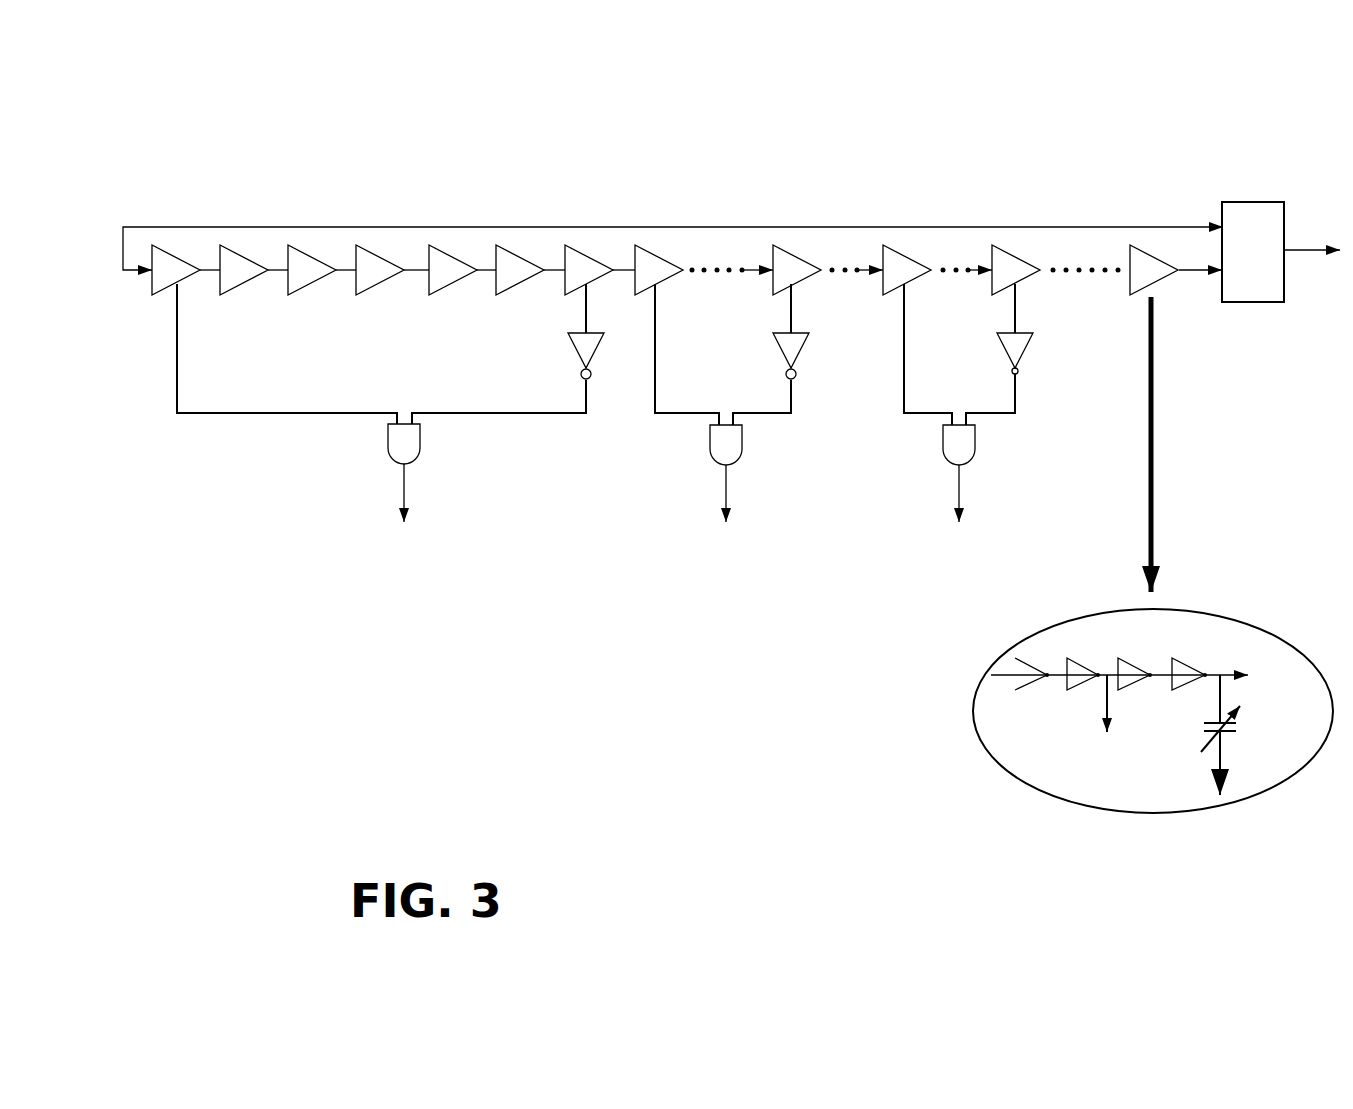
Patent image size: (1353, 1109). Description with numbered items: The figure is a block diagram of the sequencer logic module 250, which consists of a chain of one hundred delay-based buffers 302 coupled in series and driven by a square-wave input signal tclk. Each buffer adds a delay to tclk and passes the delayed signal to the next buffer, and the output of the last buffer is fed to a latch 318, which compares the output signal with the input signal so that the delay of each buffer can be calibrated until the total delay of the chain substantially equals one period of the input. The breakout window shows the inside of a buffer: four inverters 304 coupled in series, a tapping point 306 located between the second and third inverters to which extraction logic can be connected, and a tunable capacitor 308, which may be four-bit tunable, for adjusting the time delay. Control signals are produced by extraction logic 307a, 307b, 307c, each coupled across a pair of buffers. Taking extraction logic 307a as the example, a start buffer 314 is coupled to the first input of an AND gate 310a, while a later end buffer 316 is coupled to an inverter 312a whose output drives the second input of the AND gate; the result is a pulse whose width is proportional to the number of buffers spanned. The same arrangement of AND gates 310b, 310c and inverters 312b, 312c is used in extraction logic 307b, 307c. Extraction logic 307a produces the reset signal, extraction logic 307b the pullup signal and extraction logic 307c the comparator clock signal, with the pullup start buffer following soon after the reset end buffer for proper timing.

The sequencer logic module 250 is at (210, 170).
The start buffer 314 is at (160, 262).
The delay-based buffers 302 is at (388, 260).
The end buffer 316 is at (594, 262).
The latch 318 is at (1242, 218).
The extraction logic 307a is at (263, 452).
The extraction logic 307b is at (662, 445).
The extraction logic 307c is at (900, 440).
The inverter 312a is at (586, 343).
The inverter 312b is at (790, 343).
The inverter 312c is at (1015, 342).
The AND gate 310a is at (405, 443).
The AND gate 310b is at (728, 438).
The AND gate 310c is at (968, 443).
The inverters 304 is at (1075, 670).
The tapping point 306 is at (1105, 713).
The tunable capacitor 308 is at (1228, 735).